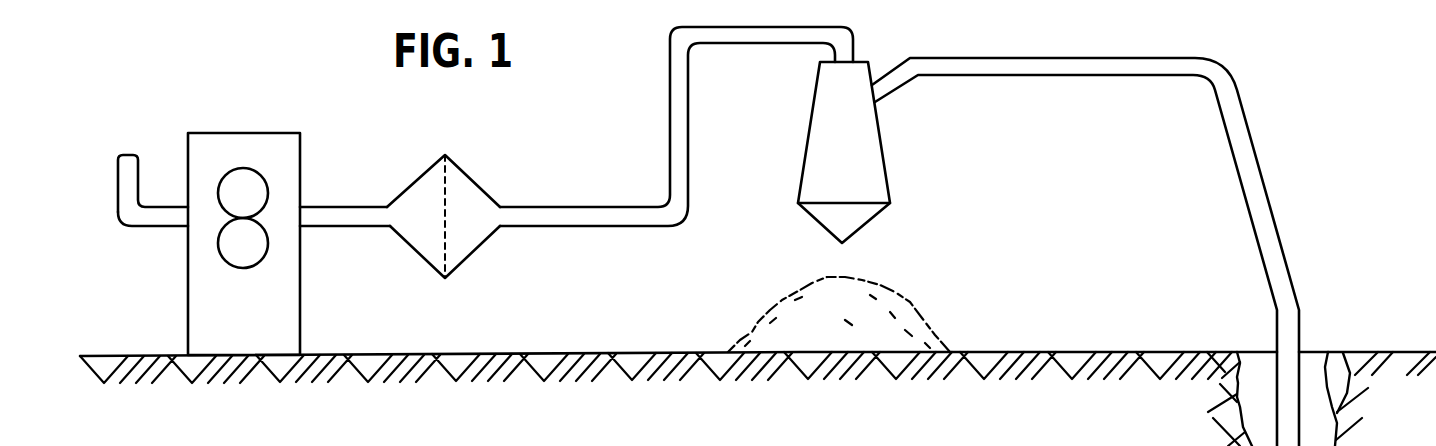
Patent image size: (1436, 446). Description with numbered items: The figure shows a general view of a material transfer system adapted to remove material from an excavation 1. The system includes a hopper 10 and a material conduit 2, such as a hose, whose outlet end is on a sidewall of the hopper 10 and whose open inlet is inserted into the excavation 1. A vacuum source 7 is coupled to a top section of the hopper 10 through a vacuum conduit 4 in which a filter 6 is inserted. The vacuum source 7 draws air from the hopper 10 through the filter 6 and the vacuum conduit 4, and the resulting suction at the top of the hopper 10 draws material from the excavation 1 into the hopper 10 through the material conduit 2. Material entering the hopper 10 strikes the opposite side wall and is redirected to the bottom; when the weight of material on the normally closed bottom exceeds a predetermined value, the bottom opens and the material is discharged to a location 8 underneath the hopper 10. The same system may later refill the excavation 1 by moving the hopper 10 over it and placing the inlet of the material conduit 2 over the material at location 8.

The excavation 1 is at (1328, 352).
The material conduit 2 is at (1257, 160).
The vacuum conduit 4 is at (335, 207).
The filter 6 is at (445, 192).
The vacuum source 7 is at (300, 152).
The location 8 is at (923, 322).
The hopper 10 is at (888, 182).